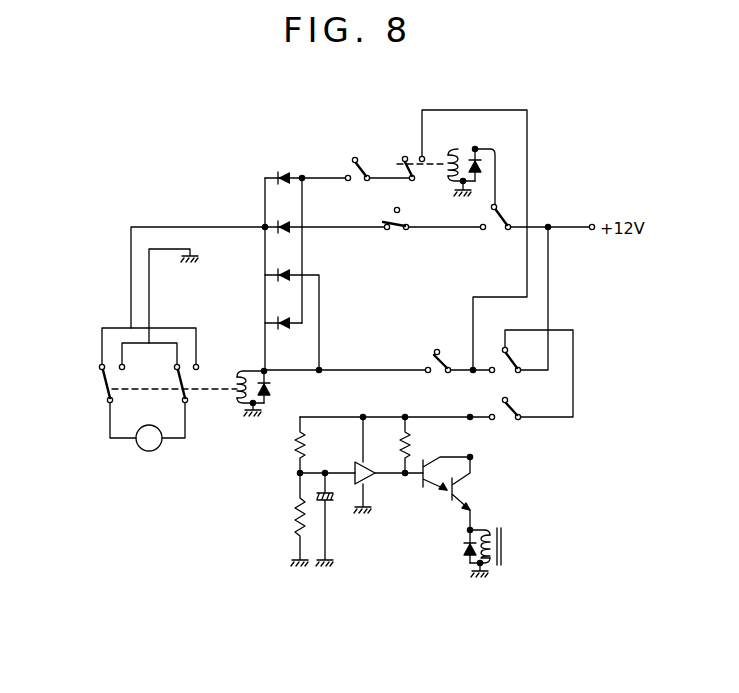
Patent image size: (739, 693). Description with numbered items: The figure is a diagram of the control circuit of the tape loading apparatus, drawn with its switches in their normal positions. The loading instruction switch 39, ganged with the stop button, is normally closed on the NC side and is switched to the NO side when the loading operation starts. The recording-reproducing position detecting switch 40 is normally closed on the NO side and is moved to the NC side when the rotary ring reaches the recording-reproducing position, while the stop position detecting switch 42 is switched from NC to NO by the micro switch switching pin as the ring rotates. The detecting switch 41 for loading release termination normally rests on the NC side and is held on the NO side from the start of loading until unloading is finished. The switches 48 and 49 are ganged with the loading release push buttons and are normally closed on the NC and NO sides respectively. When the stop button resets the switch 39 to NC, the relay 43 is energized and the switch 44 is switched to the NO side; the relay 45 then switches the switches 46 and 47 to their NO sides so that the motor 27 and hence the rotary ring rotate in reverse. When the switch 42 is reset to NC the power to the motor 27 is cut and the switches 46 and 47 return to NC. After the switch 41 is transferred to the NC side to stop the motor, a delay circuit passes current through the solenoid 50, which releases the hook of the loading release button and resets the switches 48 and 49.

The motor 27 is at (149, 452).
The loading instruction switch 39 is at (489, 213).
The recording-reproducing position detecting switch 40 is at (400, 233).
The detecting switch for loading release termination 41 is at (506, 362).
The stop position detecting switch 42 is at (352, 168).
The relay 43 is at (463, 149).
The switch 44 is at (412, 160).
The relay 45 is at (237, 405).
The switch 46 is at (107, 380).
The switch 47 is at (189, 380).
The switch 48 is at (512, 421).
The switch 49 is at (424, 362).
The solenoid 50 is at (505, 546).